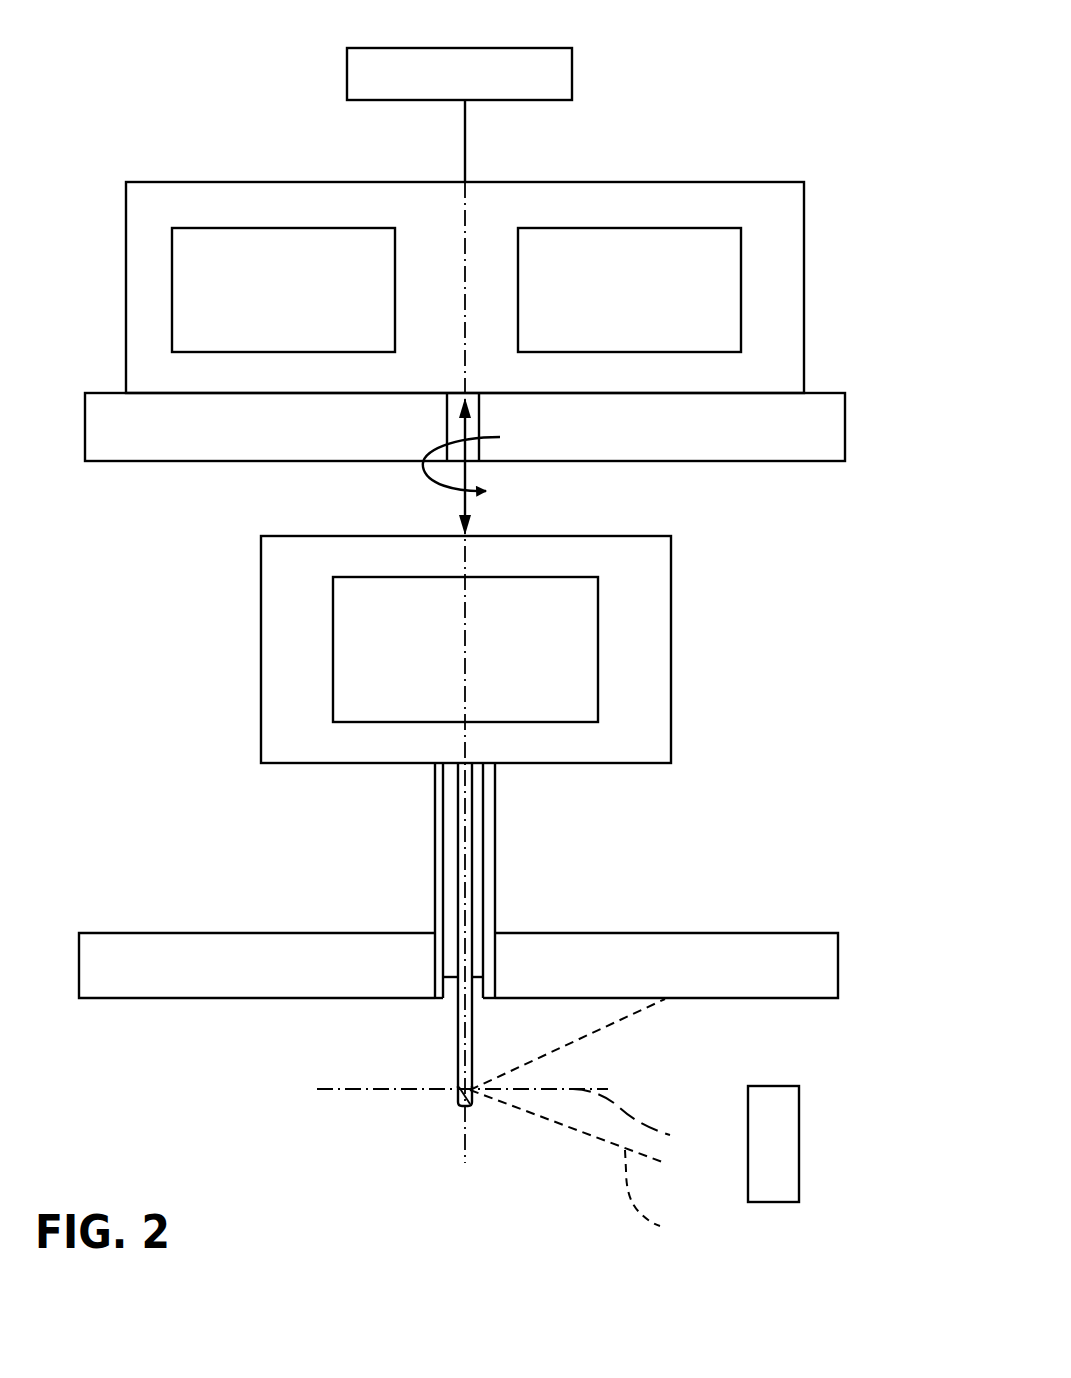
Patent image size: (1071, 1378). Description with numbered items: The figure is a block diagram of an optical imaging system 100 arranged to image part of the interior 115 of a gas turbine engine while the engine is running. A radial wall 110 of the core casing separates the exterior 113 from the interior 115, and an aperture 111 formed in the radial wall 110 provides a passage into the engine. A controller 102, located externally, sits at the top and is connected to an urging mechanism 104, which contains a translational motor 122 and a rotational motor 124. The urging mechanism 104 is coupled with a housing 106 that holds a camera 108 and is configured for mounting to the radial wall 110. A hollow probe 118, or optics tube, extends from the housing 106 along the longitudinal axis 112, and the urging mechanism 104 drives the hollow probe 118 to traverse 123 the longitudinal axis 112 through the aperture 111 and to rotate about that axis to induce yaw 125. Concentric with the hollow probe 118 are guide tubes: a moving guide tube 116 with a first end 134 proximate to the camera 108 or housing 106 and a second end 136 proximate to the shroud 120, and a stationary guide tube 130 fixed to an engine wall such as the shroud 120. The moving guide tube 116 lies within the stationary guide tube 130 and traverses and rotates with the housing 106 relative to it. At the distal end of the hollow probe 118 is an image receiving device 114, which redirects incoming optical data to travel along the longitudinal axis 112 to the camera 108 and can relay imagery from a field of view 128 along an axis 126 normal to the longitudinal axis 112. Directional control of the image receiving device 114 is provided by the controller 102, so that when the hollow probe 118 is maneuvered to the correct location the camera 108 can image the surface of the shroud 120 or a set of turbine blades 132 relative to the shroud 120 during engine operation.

The optical imaging system 100 is at (800, 32).
The controller 102 is at (572, 73).
The urging mechanism 104 is at (204, 180).
The housing 106 is at (677, 596).
The camera 108 is at (409, 693).
The radial wall 110 is at (852, 422).
The aperture 111 is at (443, 439).
The longitudinal axis 112 is at (465, 1137).
The exterior 113 is at (102, 218).
The image receiving device 114 is at (454, 1087).
The interior 115 is at (714, 1031).
The moving guide tube 116 is at (441, 793).
The hollow probe 118 is at (454, 1053).
The shroud 120 is at (845, 952).
The translational motor 122 is at (300, 335).
The traverse 123 is at (465, 424).
The rotational motor 124 is at (647, 335).
The yaw 125 is at (423, 472).
The axis 126 is at (647, 1115).
The field of view 128 is at (666, 1192).
The stationary guide tube 130 is at (500, 867).
The turbine blades 132 is at (800, 1130).
The first end 134 is at (480, 786).
The second end 136 is at (479, 970).